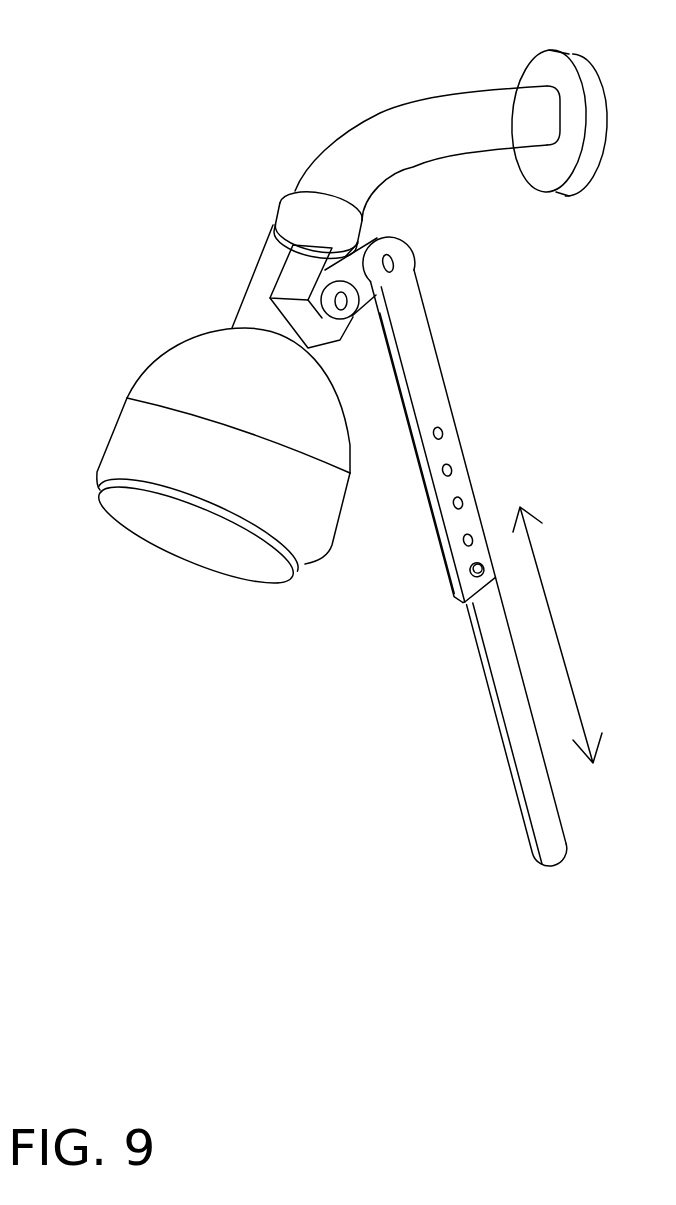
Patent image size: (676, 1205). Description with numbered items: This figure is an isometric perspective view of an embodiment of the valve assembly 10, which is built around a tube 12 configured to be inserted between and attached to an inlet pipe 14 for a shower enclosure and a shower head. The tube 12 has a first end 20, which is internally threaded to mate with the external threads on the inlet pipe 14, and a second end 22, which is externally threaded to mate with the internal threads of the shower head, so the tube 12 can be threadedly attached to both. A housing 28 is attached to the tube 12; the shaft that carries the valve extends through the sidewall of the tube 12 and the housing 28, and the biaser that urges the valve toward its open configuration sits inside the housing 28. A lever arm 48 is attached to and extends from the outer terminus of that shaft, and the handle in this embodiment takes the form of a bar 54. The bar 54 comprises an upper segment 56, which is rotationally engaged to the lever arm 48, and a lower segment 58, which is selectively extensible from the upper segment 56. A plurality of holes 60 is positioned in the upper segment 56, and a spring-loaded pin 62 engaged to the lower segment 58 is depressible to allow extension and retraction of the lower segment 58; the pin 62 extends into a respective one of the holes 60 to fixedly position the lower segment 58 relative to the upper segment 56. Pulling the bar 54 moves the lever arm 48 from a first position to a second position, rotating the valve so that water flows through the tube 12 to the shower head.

The valve assembly 10 is at (211, 749).
The tube 12 is at (270, 257).
The inlet pipe 14 is at (377, 121).
The first end 20 is at (318, 185).
The second end 22 is at (265, 325).
The housing 28 is at (300, 272).
The lever arm 48 is at (354, 288).
The bar 54 is at (436, 347).
The upper segment 56 is at (438, 539).
The lower segment 58 is at (480, 685).
The holes 60 is at (477, 555).
The pin 62 is at (483, 587).